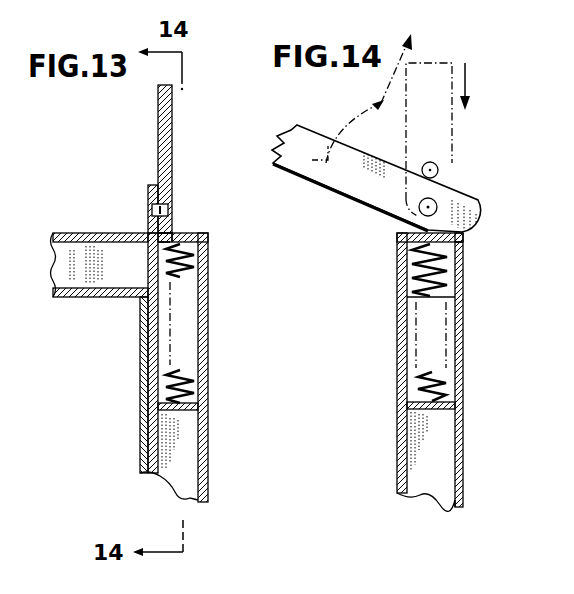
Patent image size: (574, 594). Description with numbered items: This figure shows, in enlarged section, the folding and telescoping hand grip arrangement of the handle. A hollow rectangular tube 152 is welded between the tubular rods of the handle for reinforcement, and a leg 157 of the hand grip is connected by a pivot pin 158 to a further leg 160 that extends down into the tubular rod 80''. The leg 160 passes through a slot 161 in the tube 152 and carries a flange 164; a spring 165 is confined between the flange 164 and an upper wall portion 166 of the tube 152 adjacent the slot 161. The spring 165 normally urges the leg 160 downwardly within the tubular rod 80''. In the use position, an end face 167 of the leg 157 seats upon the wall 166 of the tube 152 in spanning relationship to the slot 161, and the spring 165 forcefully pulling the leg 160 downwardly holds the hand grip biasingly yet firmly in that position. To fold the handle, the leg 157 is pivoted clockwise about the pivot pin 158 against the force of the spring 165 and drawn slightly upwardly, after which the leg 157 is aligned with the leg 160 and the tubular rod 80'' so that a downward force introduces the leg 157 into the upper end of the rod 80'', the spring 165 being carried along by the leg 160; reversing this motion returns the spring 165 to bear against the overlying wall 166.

In FIG. 13, the leg 157 is at (158, 118).
In FIG. 14, the leg 157 is at (438, 73).
In FIG. 13, the pivot pin 158 is at (148, 205).
In FIG. 14, the pivot pin 158 is at (438, 207).
In FIG. 13, the hollow rectangular tube 152 is at (78, 233).
In FIG. 13, the leg 160 is at (148, 318).
In FIG. 13, the slot 161 is at (175, 236).
In FIG. 13, the upper wall portion 166 is at (188, 236).
In FIG. 14, the upper wall portion 166 is at (397, 237).
In FIG. 13, the end face 167 is at (162, 245).
In FIG. 14, the end face 167 is at (465, 236).
In FIG. 13, the spring 165 is at (190, 371).
In FIG. 14, the spring 165 is at (420, 263).
In FIG. 13, the flange 164 is at (157, 412).
In FIG. 14, the flange 164 is at (422, 413).
In FIG. 13, the tubular rod 80'' is at (204, 367).
In FIG. 14, the tubular rod 80'' is at (462, 372).